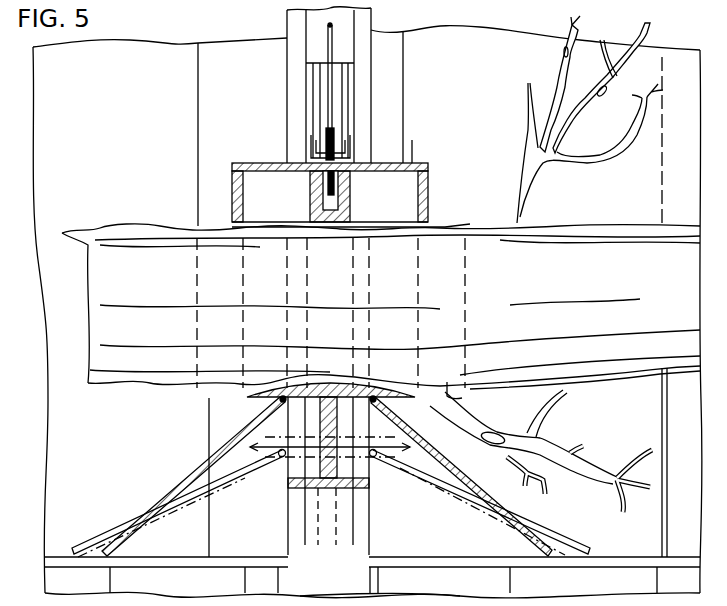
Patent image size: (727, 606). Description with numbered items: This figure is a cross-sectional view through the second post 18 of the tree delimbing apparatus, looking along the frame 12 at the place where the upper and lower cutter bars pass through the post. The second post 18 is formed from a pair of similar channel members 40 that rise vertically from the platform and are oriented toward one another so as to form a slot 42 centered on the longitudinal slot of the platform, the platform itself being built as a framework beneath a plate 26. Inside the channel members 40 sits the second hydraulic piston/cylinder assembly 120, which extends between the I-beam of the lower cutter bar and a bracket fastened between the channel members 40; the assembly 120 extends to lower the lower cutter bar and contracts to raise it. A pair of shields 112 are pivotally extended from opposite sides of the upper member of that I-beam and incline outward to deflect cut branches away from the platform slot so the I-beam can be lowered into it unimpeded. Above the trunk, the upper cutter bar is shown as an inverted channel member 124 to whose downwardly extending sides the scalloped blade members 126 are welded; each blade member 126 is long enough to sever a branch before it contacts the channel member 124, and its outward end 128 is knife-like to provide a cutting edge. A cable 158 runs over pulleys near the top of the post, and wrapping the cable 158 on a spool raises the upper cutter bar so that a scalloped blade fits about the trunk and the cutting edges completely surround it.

The second post 18 is at (375, 22).
The channel members 40 is at (287, 78).
The second hydraulic piston/cylinder assembly 120 is at (350, 112).
The cable 158 is at (330, 100).
The inverted channel member 124 is at (388, 163).
The scalloped blade members 126 is at (430, 218).
The outward end 128 is at (455, 226).
The slot 42 is at (329, 535).
The shields 112 is at (195, 476).
The plate 26 is at (617, 557).
The frame 12 is at (380, 599).